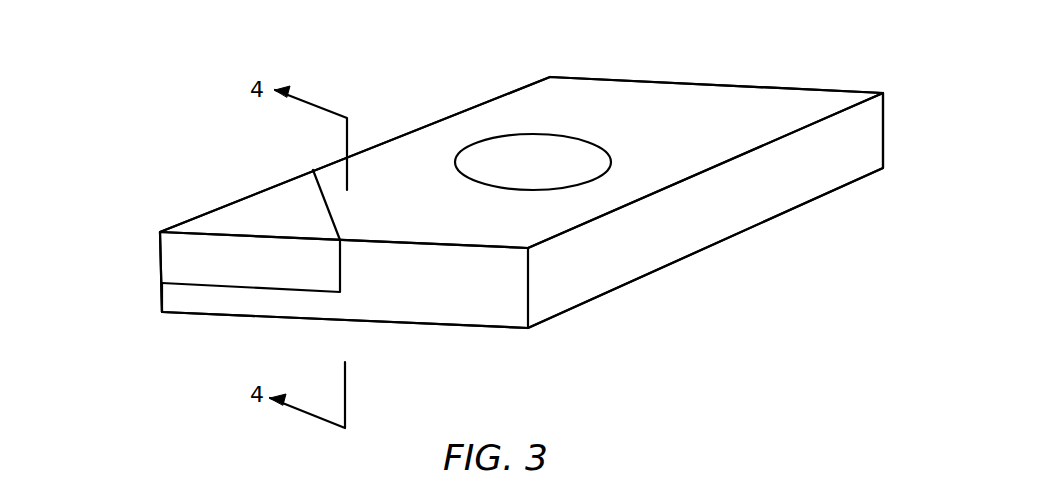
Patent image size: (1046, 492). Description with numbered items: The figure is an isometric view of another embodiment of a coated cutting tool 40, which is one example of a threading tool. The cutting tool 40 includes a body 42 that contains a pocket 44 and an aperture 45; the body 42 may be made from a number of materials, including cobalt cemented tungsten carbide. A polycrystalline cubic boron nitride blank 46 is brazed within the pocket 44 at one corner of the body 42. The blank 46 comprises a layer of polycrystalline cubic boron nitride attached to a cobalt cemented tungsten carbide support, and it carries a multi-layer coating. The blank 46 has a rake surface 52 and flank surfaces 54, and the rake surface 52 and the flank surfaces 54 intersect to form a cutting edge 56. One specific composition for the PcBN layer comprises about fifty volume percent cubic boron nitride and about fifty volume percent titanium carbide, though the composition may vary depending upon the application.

The coated cutting tool 40 is at (730, 66).
The body 42 is at (793, 188).
The pocket 44 is at (220, 288).
The aperture 45 is at (530, 160).
The polycrystalline cubic boron nitride blank 46 is at (243, 207).
The rake surface 52 is at (217, 218).
The flank surfaces 54 is at (302, 267).
The cutting edge 56 is at (158, 255).